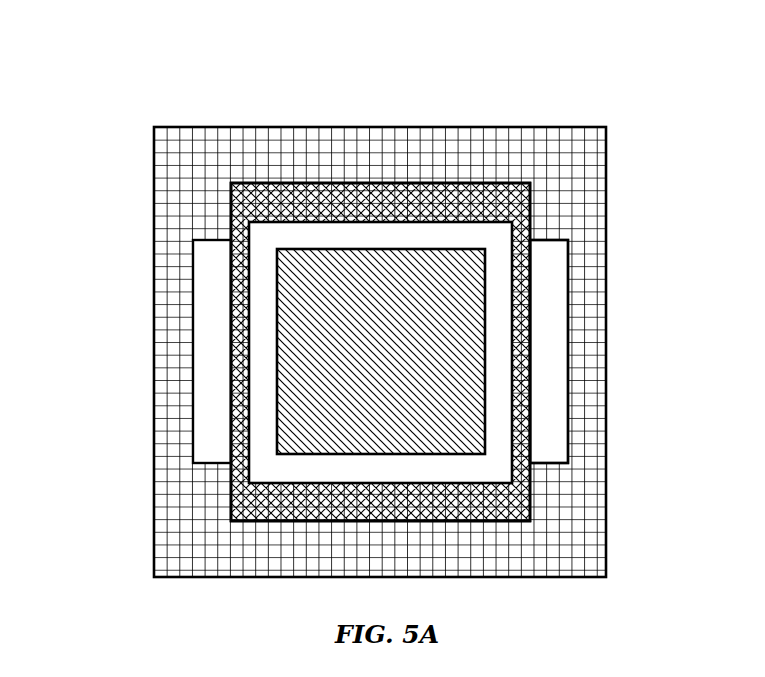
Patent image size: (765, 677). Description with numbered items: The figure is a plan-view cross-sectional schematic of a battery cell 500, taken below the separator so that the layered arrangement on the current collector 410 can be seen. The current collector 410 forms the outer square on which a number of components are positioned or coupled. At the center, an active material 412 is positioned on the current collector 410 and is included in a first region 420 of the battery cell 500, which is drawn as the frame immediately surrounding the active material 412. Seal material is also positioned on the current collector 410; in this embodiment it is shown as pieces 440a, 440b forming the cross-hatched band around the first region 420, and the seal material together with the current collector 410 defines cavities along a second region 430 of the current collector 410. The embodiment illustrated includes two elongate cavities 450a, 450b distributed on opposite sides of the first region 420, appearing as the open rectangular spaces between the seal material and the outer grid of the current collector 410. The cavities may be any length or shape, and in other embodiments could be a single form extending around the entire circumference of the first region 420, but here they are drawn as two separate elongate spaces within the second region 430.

The battery cell 500 is at (92, 142).
The current collector 410 is at (606, 168).
The active material 412 is at (277, 297).
The first region 420 is at (235, 425).
The second region 430 is at (568, 327).
The seal material piece 440a is at (530, 215).
The seal material piece 440b is at (606, 540).
The elongate cavity 450a is at (568, 400).
The elongate cavity 450b is at (193, 355).